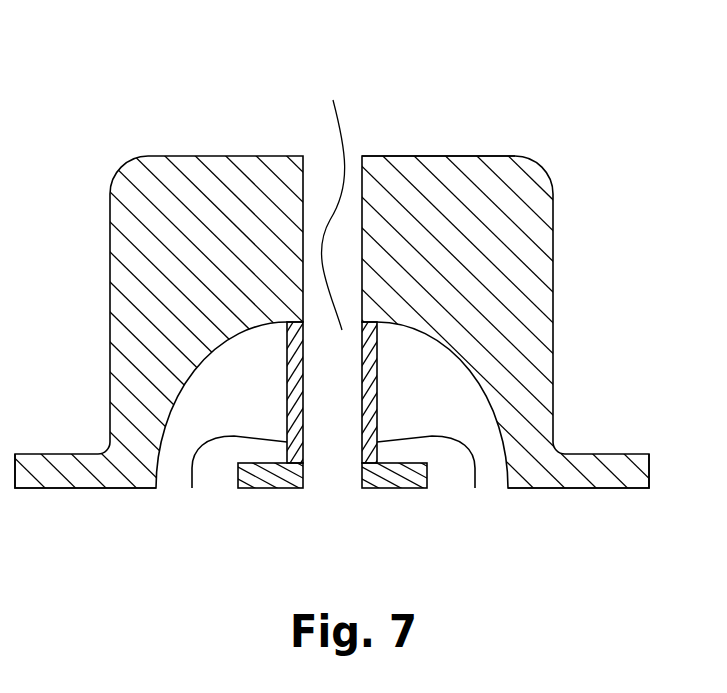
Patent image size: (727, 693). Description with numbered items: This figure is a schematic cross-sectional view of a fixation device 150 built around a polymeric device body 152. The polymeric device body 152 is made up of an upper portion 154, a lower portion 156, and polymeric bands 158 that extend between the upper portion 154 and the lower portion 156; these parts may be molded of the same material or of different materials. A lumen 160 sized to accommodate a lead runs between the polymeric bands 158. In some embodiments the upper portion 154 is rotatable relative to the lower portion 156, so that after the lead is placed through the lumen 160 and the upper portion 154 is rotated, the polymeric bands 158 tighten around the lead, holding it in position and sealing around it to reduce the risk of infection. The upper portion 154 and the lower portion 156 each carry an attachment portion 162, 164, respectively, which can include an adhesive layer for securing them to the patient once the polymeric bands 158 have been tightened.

The fixation device 150 is at (130, 98).
The polymeric device body 152 is at (553, 220).
The upper portion 154 is at (488, 156).
The lower portion 156 is at (193, 488).
The polymeric bands 158 is at (473, 488).
The lumen 160 is at (332, 202).
The attachment portion 162 is at (88, 488).
The attachment portion 164 is at (280, 488).